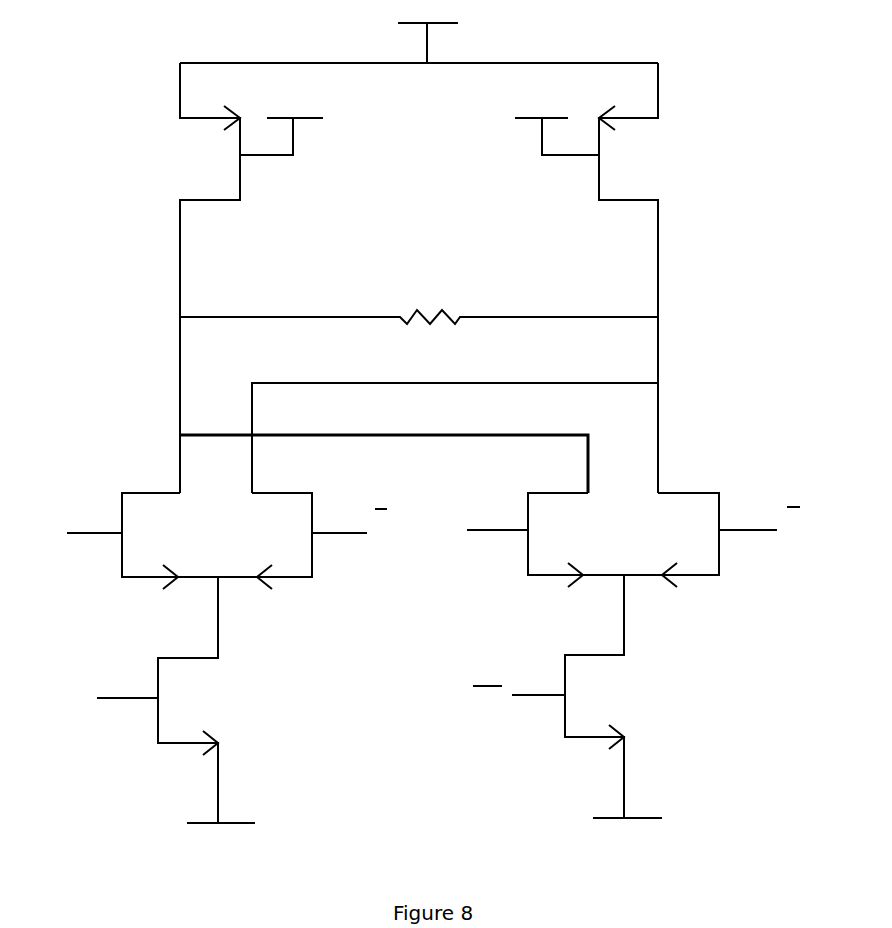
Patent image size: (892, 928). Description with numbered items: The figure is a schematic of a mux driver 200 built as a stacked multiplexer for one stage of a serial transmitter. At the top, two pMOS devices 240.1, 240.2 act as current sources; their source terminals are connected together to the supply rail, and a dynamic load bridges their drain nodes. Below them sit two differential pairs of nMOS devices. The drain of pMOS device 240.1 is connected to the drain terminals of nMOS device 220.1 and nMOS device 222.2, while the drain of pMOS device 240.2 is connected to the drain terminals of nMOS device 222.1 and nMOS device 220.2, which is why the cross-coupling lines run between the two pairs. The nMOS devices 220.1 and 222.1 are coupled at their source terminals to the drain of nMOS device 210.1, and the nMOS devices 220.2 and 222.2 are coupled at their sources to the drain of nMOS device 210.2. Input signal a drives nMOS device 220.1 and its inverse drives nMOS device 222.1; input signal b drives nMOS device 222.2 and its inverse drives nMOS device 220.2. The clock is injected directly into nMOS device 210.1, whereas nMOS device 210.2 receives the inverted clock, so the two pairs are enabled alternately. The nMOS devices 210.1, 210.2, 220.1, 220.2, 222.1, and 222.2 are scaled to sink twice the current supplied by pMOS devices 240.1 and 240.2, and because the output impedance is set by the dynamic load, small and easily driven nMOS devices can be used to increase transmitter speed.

The mux driver 200 is at (424, 423).
The pMOS device 240.1 is at (245, 278).
The pMOS device 240.2 is at (597, 278).
The nMOS device 220.1 is at (170, 541).
The nMOS device 222.1 is at (265, 541).
The nMOS device 222.2 is at (576, 540).
The nMOS device 220.2 is at (671, 540).
The nMOS device 210.1 is at (206, 700).
The nMOS device 210.2 is at (613, 696).